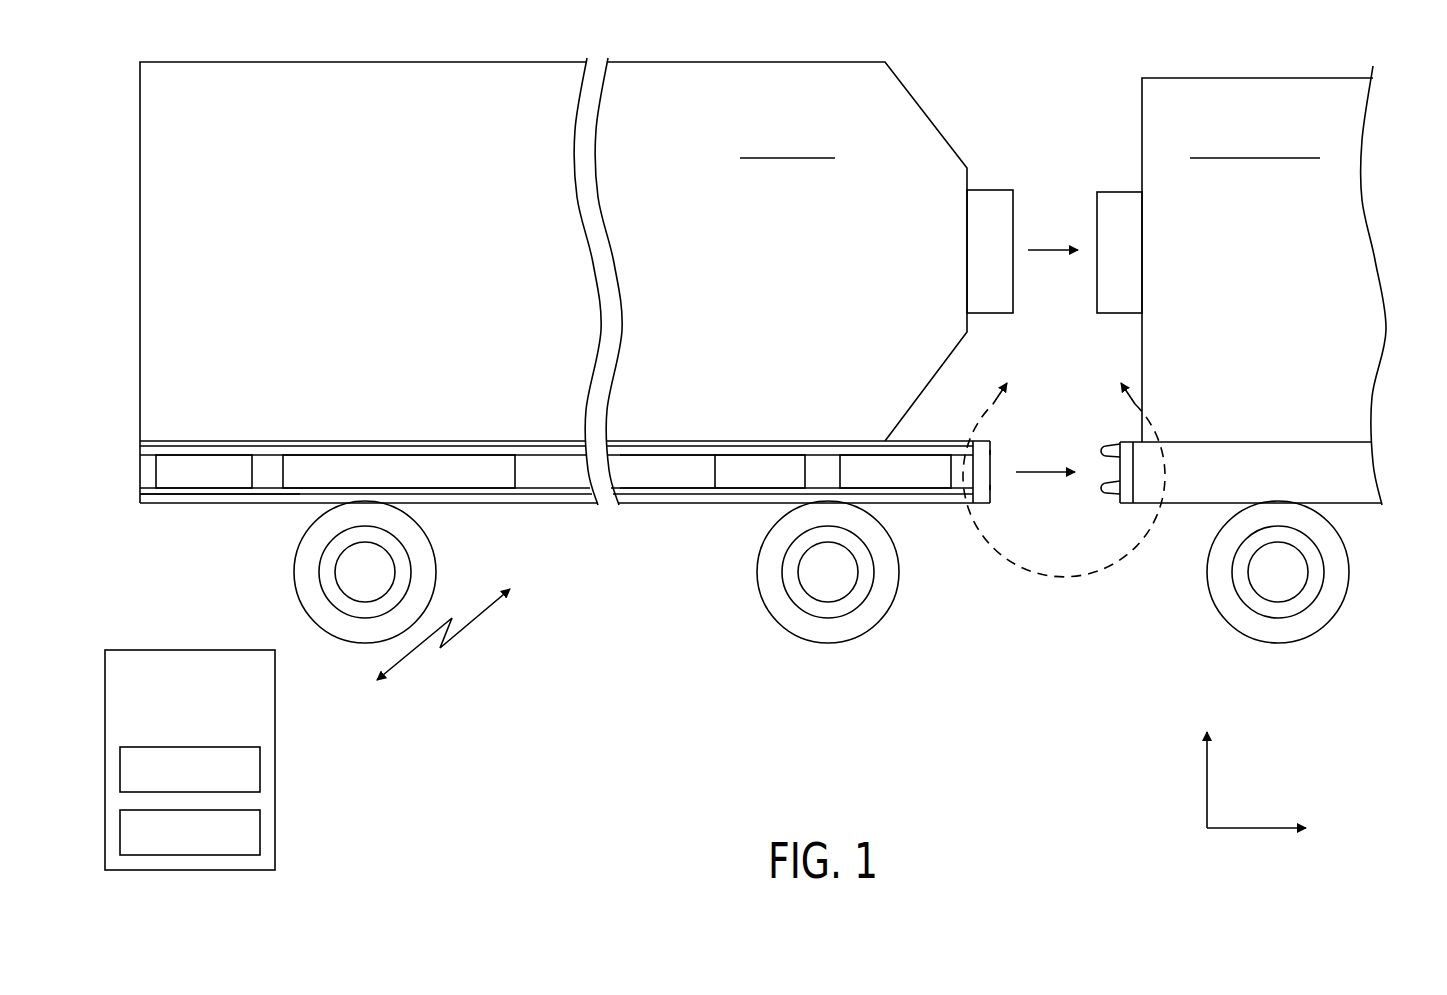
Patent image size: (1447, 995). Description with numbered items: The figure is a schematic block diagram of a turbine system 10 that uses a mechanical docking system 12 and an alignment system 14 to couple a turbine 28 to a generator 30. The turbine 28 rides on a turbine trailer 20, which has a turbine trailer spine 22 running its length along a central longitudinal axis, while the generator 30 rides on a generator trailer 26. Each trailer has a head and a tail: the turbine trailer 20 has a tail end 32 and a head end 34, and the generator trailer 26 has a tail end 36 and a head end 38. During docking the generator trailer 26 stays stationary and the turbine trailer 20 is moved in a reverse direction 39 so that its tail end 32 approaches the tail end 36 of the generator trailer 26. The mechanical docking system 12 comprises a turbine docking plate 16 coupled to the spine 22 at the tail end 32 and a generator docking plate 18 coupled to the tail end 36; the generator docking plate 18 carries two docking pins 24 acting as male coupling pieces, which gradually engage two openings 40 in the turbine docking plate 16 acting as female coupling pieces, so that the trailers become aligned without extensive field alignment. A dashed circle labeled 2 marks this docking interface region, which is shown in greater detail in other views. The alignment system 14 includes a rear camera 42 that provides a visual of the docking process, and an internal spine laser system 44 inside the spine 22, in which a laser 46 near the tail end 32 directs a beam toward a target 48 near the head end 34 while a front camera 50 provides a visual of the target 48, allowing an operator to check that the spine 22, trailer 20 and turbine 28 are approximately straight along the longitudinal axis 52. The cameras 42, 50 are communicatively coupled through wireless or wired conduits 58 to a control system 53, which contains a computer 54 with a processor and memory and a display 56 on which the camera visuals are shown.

The section view circle 2 is at (1064, 465).
The turbine system 10 is at (709, 663).
The mechanical docking system 12 is at (1053, 548).
The alignment system 14 is at (277, 444).
The turbine docking plate 16 is at (985, 495).
The generator docking plate 18 is at (1125, 495).
The turbine trailer 20 is at (690, 450).
The turbine trailer spine 22 is at (637, 468).
The docking pins 24 is at (1102, 488).
The generator trailer 26 is at (1243, 455).
The turbine 28 is at (787, 73).
The generator 30 is at (1258, 88).
The tail end of the turbine trailer 32 is at (942, 541).
The head end of the turbine trailer 34 is at (116, 504).
The tail end of the generator trailer 36 is at (1133, 568).
The head end of the generator trailer 38 is at (1413, 483).
The reverse direction 39 is at (1052, 248).
The openings 40 is at (992, 487).
The rear camera 42 is at (848, 460).
The internal spine laser system 44 is at (270, 497).
The laser 46 is at (737, 492).
The target 48 is at (200, 492).
The front camera 50 is at (300, 492).
The longitudinal axis 52 is at (1252, 830).
The control system 53 is at (275, 693).
The computer 54 is at (260, 768).
The display 56 is at (260, 832).
The wireless or wired conduits 58 is at (470, 625).